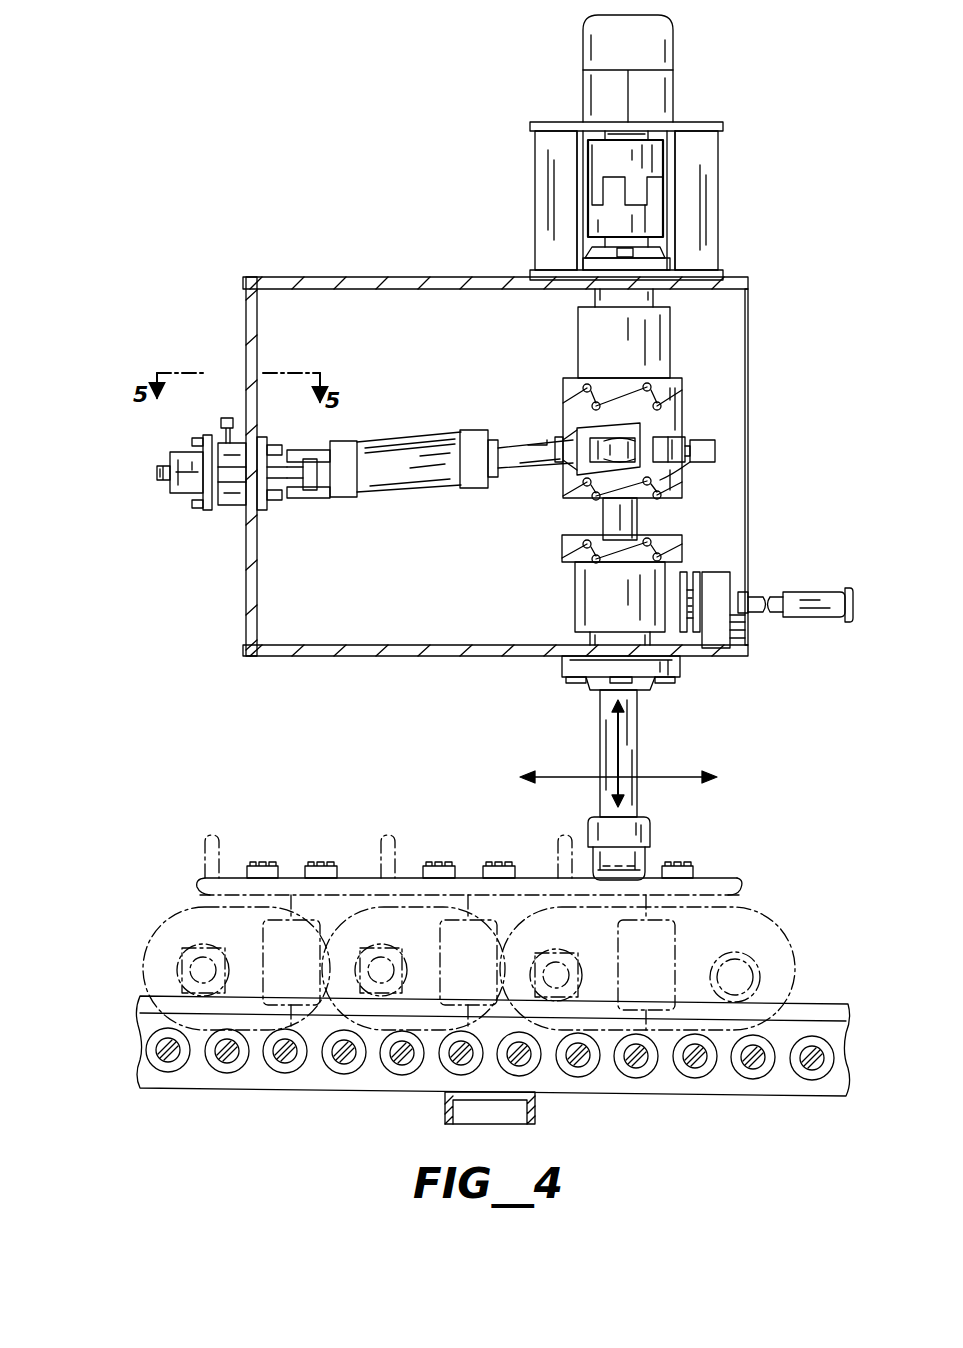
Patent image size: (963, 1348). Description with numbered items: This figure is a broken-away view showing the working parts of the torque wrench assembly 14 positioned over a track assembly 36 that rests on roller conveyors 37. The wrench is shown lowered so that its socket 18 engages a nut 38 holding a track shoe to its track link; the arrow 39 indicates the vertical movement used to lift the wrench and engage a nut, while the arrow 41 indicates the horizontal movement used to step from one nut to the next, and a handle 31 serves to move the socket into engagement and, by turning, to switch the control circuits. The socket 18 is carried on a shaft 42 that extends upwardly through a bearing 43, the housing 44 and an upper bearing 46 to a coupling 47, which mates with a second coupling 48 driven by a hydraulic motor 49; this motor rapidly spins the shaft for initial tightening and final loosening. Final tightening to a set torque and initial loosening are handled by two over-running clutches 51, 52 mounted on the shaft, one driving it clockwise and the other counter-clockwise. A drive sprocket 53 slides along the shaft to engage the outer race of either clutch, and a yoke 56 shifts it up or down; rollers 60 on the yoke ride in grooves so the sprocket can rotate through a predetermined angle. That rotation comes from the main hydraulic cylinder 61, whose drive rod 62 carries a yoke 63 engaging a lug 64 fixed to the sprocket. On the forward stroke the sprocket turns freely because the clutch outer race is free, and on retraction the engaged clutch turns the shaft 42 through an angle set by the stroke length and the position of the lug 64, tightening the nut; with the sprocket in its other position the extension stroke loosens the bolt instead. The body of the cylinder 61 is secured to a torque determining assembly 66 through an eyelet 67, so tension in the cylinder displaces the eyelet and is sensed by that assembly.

The torque wrench assembly 14 is at (412, 258).
The socket 18 is at (648, 838).
The handle 31 is at (798, 603).
The track assembly 36 is at (365, 878).
The roller conveyors 37 is at (812, 1045).
The nut 38 is at (645, 866).
The arrow 39 is at (615, 740).
The arrow 41 is at (565, 778).
The shaft 42 is at (615, 517).
The bearing 43 is at (575, 664).
The housing 44 is at (410, 656).
The upper bearing 46 is at (582, 261).
The coupling 47 is at (595, 218).
The coupling 48 is at (605, 158).
The hydraulic motor 49 is at (605, 55).
The over-running clutch 51 is at (578, 606).
The over-running clutch 52 is at (597, 330).
The drive sprocket 53 is at (665, 418).
The yoke 56 is at (692, 463).
The rollers 60 is at (682, 444).
The main hydraulic cylinder 61 is at (400, 467).
The drive rod 62 is at (508, 453).
The yoke 63 is at (580, 433).
The lug 64 is at (600, 447).
The torque determining assembly 66 is at (230, 506).
The eyelet 67 is at (305, 486).